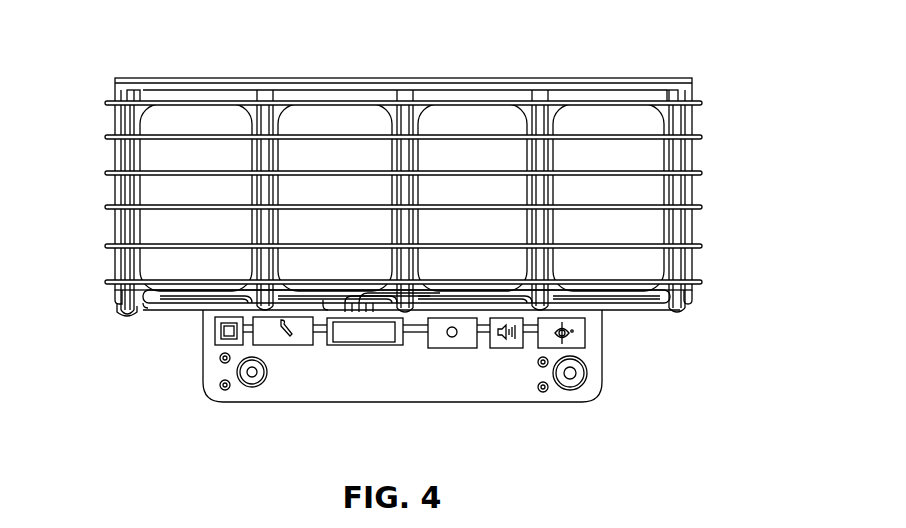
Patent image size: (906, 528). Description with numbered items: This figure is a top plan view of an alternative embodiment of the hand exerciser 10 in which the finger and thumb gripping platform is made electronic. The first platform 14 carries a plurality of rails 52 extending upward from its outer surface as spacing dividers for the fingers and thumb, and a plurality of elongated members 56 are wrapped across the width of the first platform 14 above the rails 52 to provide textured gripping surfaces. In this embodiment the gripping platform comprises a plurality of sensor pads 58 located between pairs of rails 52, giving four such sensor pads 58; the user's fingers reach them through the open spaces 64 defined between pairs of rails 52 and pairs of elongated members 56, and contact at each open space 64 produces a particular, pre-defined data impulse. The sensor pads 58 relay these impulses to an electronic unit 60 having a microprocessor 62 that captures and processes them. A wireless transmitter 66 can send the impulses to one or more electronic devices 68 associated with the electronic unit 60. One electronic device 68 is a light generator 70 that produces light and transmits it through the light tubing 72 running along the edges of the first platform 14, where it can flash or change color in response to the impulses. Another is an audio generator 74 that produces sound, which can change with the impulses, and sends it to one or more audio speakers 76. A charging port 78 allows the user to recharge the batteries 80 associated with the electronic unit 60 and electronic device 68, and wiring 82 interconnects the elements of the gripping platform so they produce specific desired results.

The hand exerciser 10 is at (403, 233).
The first platform 14 is at (147, 306).
The rails 52 is at (274, 120).
The elongated members 56 is at (460, 135).
The sensor pads 58 is at (189, 120).
The electronic unit 60 is at (403, 345).
The microprocessor 62 is at (372, 333).
The open spaces 64 is at (645, 159).
The wireless transmitter 66 is at (573, 335).
The electronic device 68 is at (488, 387).
The light generator 70 is at (467, 338).
The light tubing 72 is at (117, 265).
The audio generator 74 is at (513, 340).
The audio speakers 76 is at (582, 378).
The charging port 78 is at (215, 340).
The batteries 80 is at (287, 345).
The wiring 82 is at (323, 306).